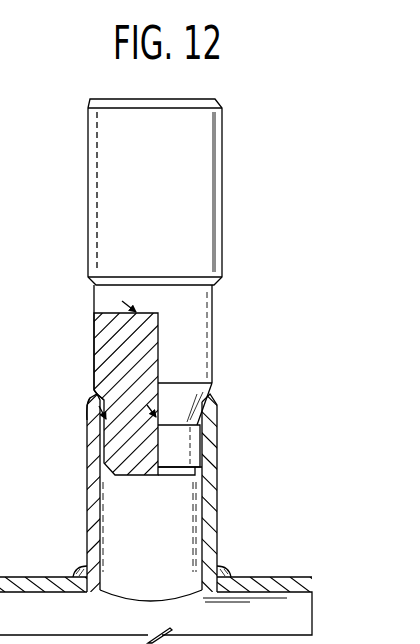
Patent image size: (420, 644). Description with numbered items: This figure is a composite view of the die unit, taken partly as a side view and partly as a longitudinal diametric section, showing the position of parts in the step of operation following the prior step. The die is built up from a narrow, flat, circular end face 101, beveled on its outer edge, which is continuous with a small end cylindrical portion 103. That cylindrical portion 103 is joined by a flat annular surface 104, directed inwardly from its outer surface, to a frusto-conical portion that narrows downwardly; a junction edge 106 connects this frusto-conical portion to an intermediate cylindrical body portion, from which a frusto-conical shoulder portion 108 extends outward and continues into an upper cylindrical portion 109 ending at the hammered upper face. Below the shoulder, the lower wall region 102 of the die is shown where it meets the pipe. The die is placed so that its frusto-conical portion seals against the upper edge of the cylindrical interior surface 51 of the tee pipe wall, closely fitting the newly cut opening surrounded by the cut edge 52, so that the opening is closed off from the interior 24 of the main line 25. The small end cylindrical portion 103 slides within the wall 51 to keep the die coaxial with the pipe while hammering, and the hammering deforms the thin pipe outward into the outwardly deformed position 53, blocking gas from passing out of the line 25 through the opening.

The upper cylindrical portion 109 is at (196, 213).
The frusto-conical shoulder portion 108 is at (213, 287).
The intermediate frusto-conical cylindrical portion junction edge 106 is at (212, 383).
The flat annular surface 104 is at (163, 422).
The die unit small end cylindrical portion 103 is at (181, 453).
The bottom wall 102 is at (201, 469).
The circular end face 101 is at (138, 478).
The cut edge 52 is at (97, 396).
The outwardly deformed position 53 is at (85, 398).
The cylindrical interior surface 51 is at (198, 549).
The line 25 is at (32, 577).
The interior of the line 24 is at (80, 613).